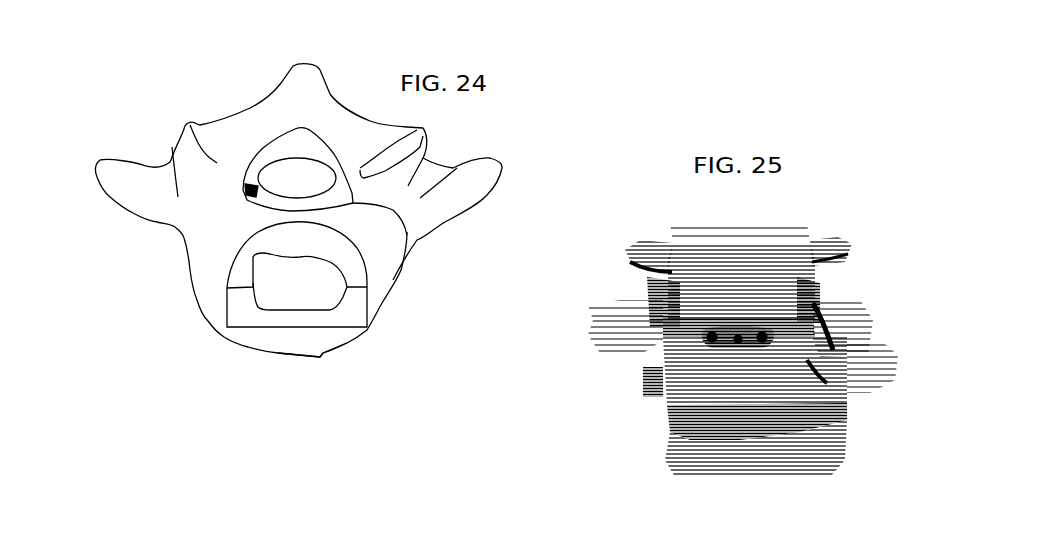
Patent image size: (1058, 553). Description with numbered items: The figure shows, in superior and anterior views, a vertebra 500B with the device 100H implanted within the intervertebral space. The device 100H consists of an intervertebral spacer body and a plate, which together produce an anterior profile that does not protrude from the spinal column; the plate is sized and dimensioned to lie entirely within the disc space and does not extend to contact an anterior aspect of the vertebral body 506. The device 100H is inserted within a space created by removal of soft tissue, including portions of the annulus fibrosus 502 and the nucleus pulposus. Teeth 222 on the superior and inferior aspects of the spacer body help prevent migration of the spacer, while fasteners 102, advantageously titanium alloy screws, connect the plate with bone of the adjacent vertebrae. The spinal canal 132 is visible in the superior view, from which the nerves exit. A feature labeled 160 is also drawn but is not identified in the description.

In FIG. 24, the teeth 222 is at (335, 210).
In FIG. 24, the spinal canal 132 is at (252, 190).
In FIG. 24, the vertebral body implant region 160 is at (310, 283).
In FIG. 24, the device 100H is at (323, 353).
In FIG. 25, the device 100H is at (762, 366).
In FIG. 24, the vertebra 500B is at (394, 234).
In FIG. 24, the vertebral body 506 is at (694, 381).
In FIG. 25, the fasteners 102 is at (698, 278).
In FIG. 25, the annulus fibrosus 502 is at (803, 282).